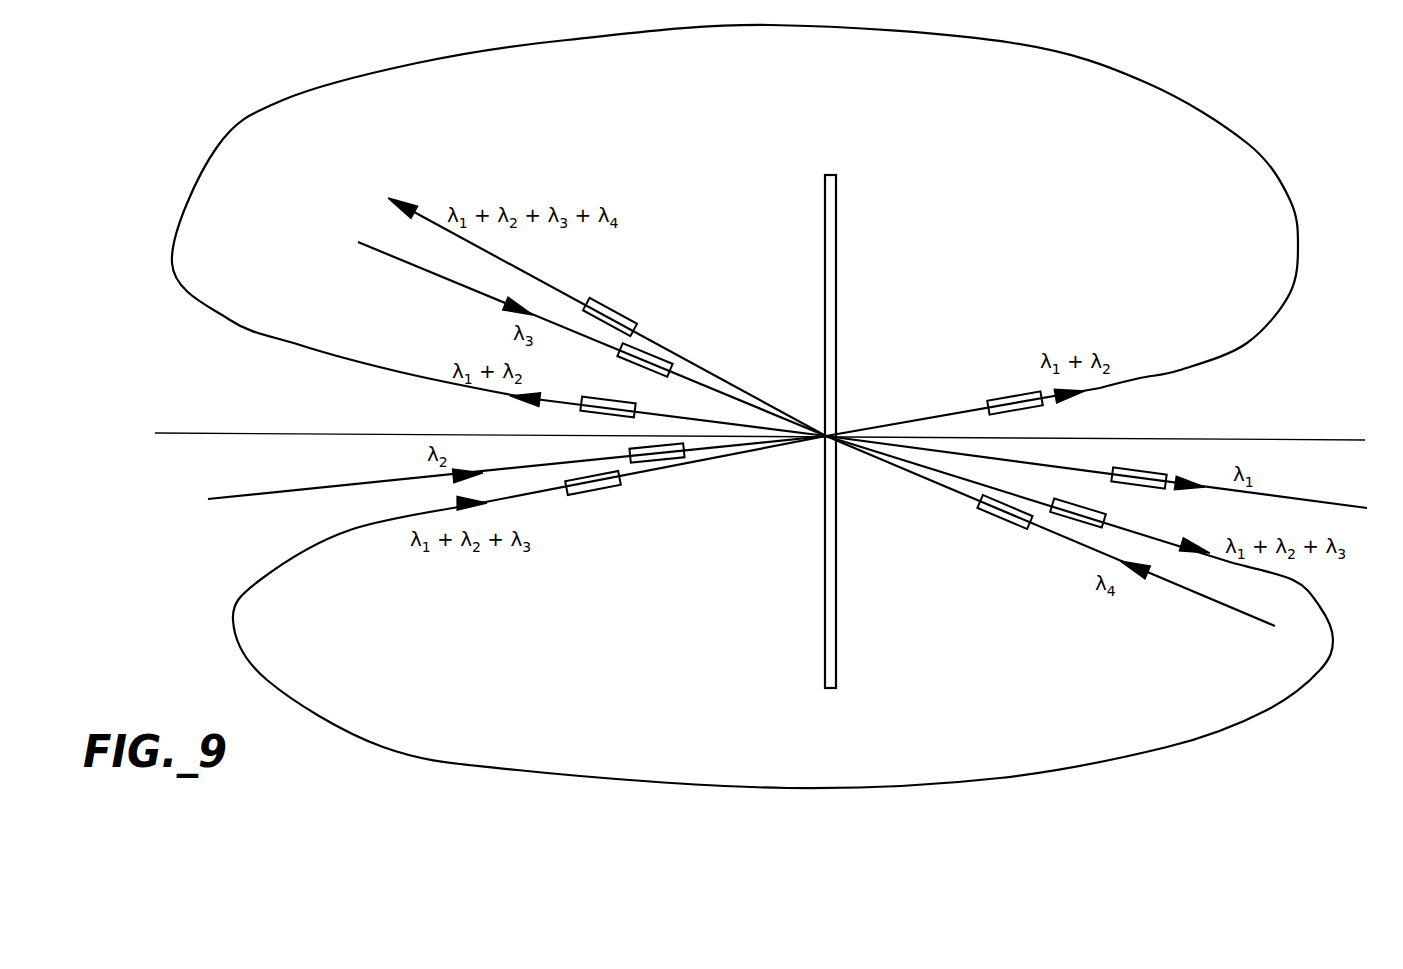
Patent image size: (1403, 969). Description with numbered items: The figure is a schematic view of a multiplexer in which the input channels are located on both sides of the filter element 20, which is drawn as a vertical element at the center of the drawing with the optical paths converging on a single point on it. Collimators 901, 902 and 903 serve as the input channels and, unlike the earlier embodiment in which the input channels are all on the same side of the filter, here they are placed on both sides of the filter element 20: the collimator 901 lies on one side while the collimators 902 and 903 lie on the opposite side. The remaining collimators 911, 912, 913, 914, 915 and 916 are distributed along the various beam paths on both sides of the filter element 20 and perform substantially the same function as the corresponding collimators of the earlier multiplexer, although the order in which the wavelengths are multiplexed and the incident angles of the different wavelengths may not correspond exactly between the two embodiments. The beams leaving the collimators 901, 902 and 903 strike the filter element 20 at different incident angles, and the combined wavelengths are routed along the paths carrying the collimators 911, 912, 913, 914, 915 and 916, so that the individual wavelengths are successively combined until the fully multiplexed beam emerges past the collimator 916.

The filter element 20 is at (838, 292).
The collimator 901 is at (1135, 468).
The collimator 902 is at (657, 465).
The collimator 903 is at (652, 352).
The collimator 911 is at (1004, 524).
The collimator 912 is at (587, 419).
The collimator 913 is at (1019, 394).
The collimator 914 is at (1080, 524).
The collimator 915 is at (596, 491).
The collimator 916 is at (611, 308).